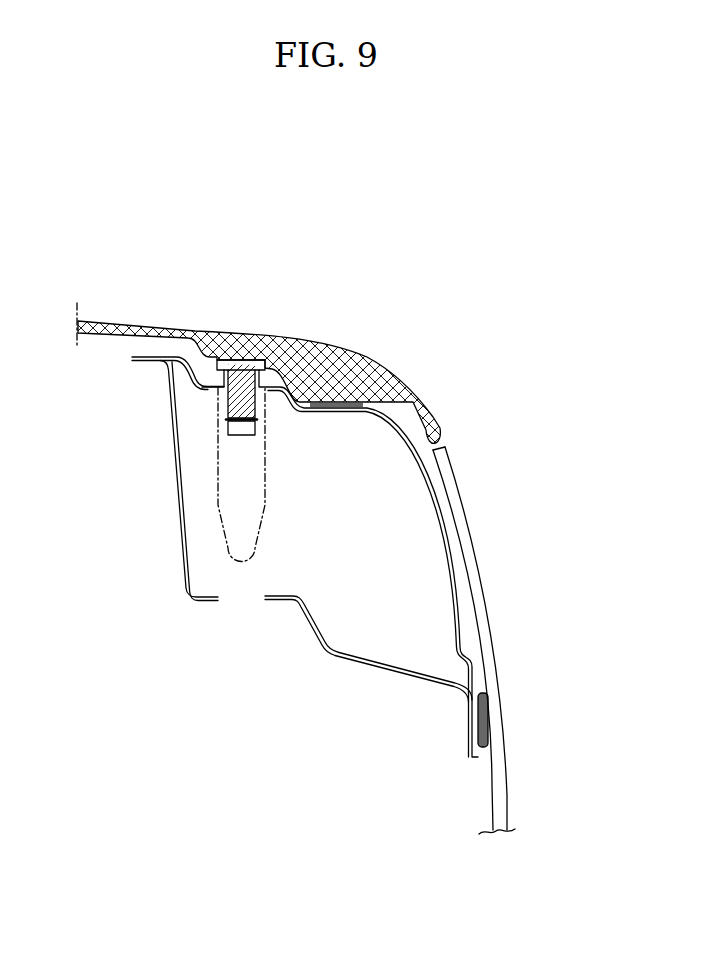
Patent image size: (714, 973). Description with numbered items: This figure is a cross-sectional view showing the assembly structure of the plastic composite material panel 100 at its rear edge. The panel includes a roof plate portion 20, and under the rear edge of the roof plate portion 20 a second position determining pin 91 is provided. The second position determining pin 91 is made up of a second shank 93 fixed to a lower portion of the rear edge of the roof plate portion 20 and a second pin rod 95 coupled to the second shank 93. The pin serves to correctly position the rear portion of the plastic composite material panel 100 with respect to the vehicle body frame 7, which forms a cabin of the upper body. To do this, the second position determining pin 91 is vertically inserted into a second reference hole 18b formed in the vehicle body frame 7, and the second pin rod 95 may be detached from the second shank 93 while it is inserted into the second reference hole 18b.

The plastic composite material panel 100 is at (327, 197).
The roof plate portion 20 is at (218, 306).
The second shank 93 is at (242, 372).
The second reference hole 18b is at (260, 388).
The vehicle body frame 7 is at (148, 393).
The second position determining pin 91 is at (198, 486).
The second pin rod 95 is at (263, 503).